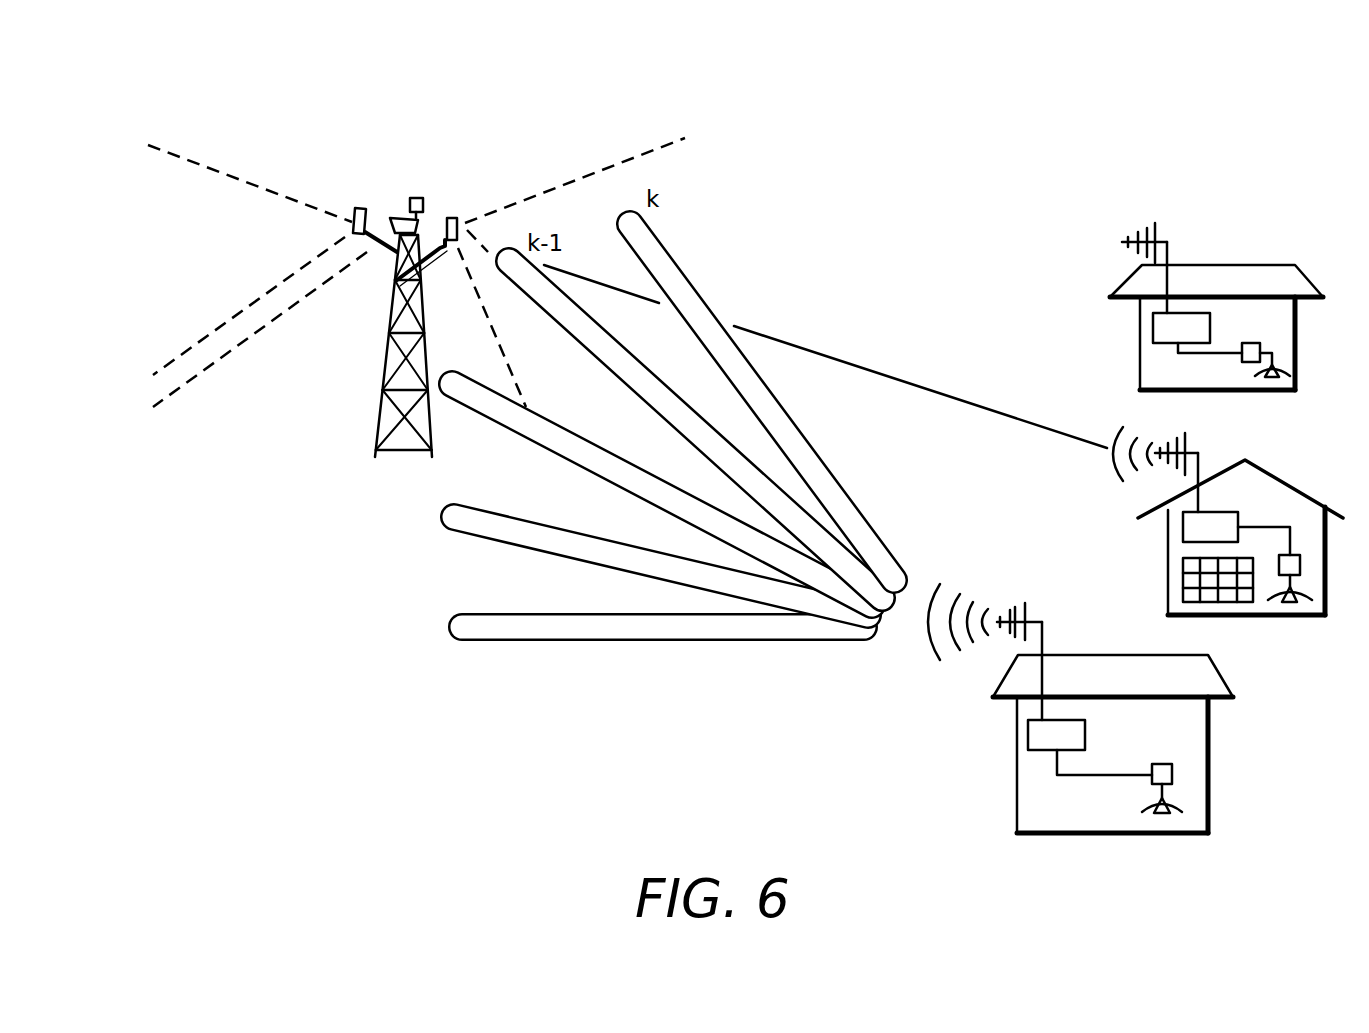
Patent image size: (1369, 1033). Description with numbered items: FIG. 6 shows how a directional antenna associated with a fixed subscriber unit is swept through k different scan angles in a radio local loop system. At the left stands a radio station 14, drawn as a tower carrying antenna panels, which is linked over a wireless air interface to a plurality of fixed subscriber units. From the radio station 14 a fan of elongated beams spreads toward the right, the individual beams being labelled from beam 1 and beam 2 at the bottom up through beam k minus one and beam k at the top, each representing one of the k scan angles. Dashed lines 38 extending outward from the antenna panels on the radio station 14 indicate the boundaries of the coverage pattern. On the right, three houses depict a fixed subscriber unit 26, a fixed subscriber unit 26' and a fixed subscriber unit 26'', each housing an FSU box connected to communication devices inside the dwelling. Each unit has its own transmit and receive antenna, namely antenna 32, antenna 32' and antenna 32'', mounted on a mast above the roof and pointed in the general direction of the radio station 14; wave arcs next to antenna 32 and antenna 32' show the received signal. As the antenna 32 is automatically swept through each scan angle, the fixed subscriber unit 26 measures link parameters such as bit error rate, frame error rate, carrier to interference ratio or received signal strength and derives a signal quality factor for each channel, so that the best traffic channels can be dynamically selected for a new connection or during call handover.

The beam coverage boundary 38 is at (163, 188).
The radio station 14 is at (345, 376).
The beam 1 is at (642, 628).
The beam 2 is at (640, 556).
The fixed subscriber unit 26 is at (1095, 744).
The fixed subscriber unit 26' is at (1219, 537).
The fixed subscriber unit 26'' is at (1197, 327).
The transmit and receive antenna 32 is at (1018, 652).
The transmit and receive antenna 32' is at (1185, 468).
The transmit and receive antenna 32'' is at (1186, 268).